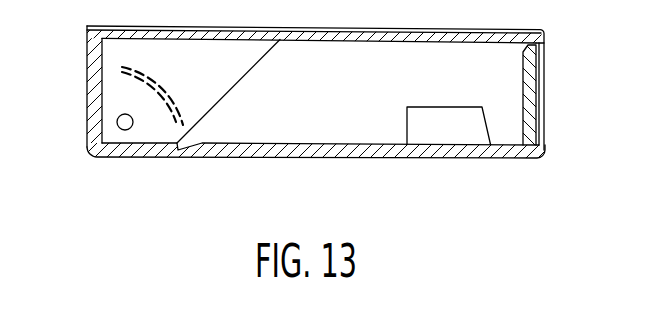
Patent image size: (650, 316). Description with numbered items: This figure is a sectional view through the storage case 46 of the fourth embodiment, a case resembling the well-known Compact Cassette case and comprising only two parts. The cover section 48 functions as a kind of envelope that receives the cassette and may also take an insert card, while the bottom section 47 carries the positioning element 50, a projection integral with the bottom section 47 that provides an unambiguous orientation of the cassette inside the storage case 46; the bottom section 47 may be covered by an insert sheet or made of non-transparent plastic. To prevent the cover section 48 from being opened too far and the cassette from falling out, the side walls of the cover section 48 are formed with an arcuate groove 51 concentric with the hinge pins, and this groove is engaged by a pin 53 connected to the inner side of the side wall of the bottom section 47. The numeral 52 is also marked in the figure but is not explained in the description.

The storage case 46 is at (386, 167).
The bottom section 47 is at (295, 166).
The cover section 48 is at (80, 113).
The positioning element 50 is at (472, 131).
The arcuate groove 51 is at (125, 61).
The pivot pin 52 is at (125, 122).
The pin 53 is at (167, 78).